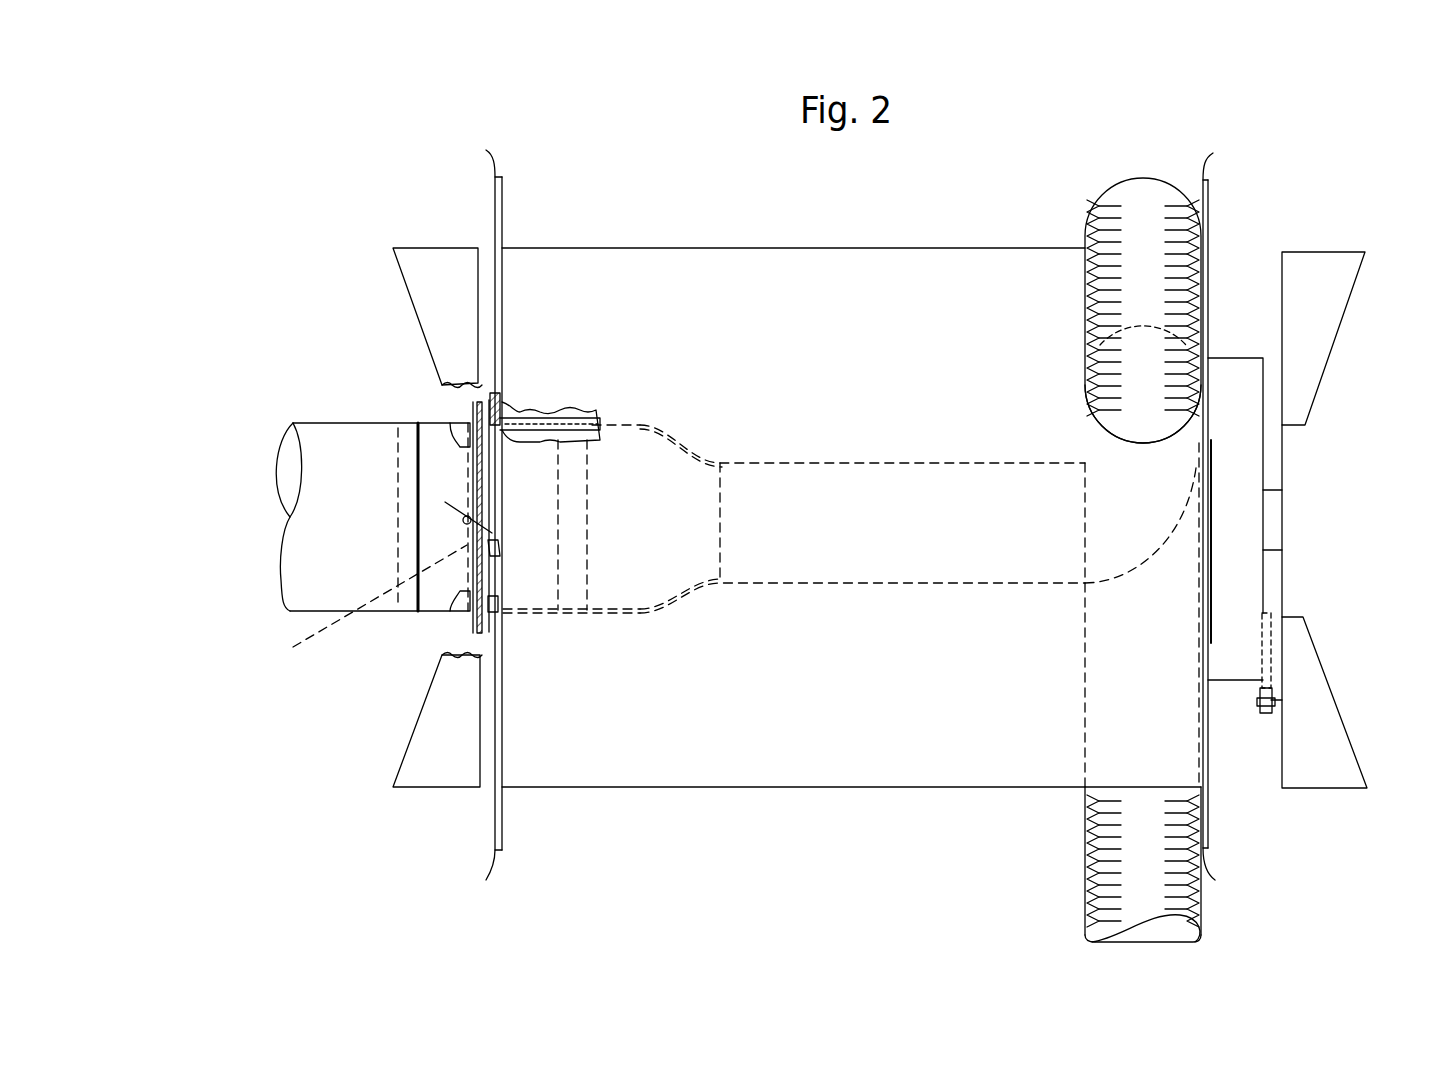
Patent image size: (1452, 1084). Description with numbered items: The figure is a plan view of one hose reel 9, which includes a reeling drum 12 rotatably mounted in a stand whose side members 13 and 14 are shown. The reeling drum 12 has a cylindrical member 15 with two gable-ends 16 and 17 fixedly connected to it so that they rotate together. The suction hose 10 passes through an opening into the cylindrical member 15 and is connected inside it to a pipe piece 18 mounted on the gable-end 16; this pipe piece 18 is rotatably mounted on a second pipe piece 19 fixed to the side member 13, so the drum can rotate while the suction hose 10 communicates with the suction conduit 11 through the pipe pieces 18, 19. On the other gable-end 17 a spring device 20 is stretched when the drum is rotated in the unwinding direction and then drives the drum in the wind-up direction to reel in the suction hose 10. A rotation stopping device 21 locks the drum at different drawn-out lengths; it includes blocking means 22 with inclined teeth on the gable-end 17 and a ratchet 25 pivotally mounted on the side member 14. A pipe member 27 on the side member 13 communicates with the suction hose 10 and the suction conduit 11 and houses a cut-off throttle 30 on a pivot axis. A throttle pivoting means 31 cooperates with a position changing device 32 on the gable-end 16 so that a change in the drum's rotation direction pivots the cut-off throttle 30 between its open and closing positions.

The hose reel 9 is at (1255, 183).
The suction hose 10 is at (1142, 885).
The suction conduit 11 is at (298, 573).
The reeling drum 12 is at (953, 240).
The side member 13 is at (440, 290).
The side member 14 is at (1318, 338).
The cylindrical member 15 is at (740, 247).
The gable-end 16 is at (494, 200).
The gable-end 17 is at (1208, 205).
The pipe piece 18 is at (563, 428).
The second pipe piece 19 is at (548, 423).
The spring device 20 is at (1230, 492).
The rotation stopping device 21 is at (1270, 722).
The blocking means 22 is at (1270, 640).
The ratchet 25 is at (1275, 705).
The pipe member 27 is at (447, 432).
The cut-off throttle 30 is at (273, 655).
The throttle pivoting means 31 is at (494, 522).
The position changing device 32 is at (487, 577).